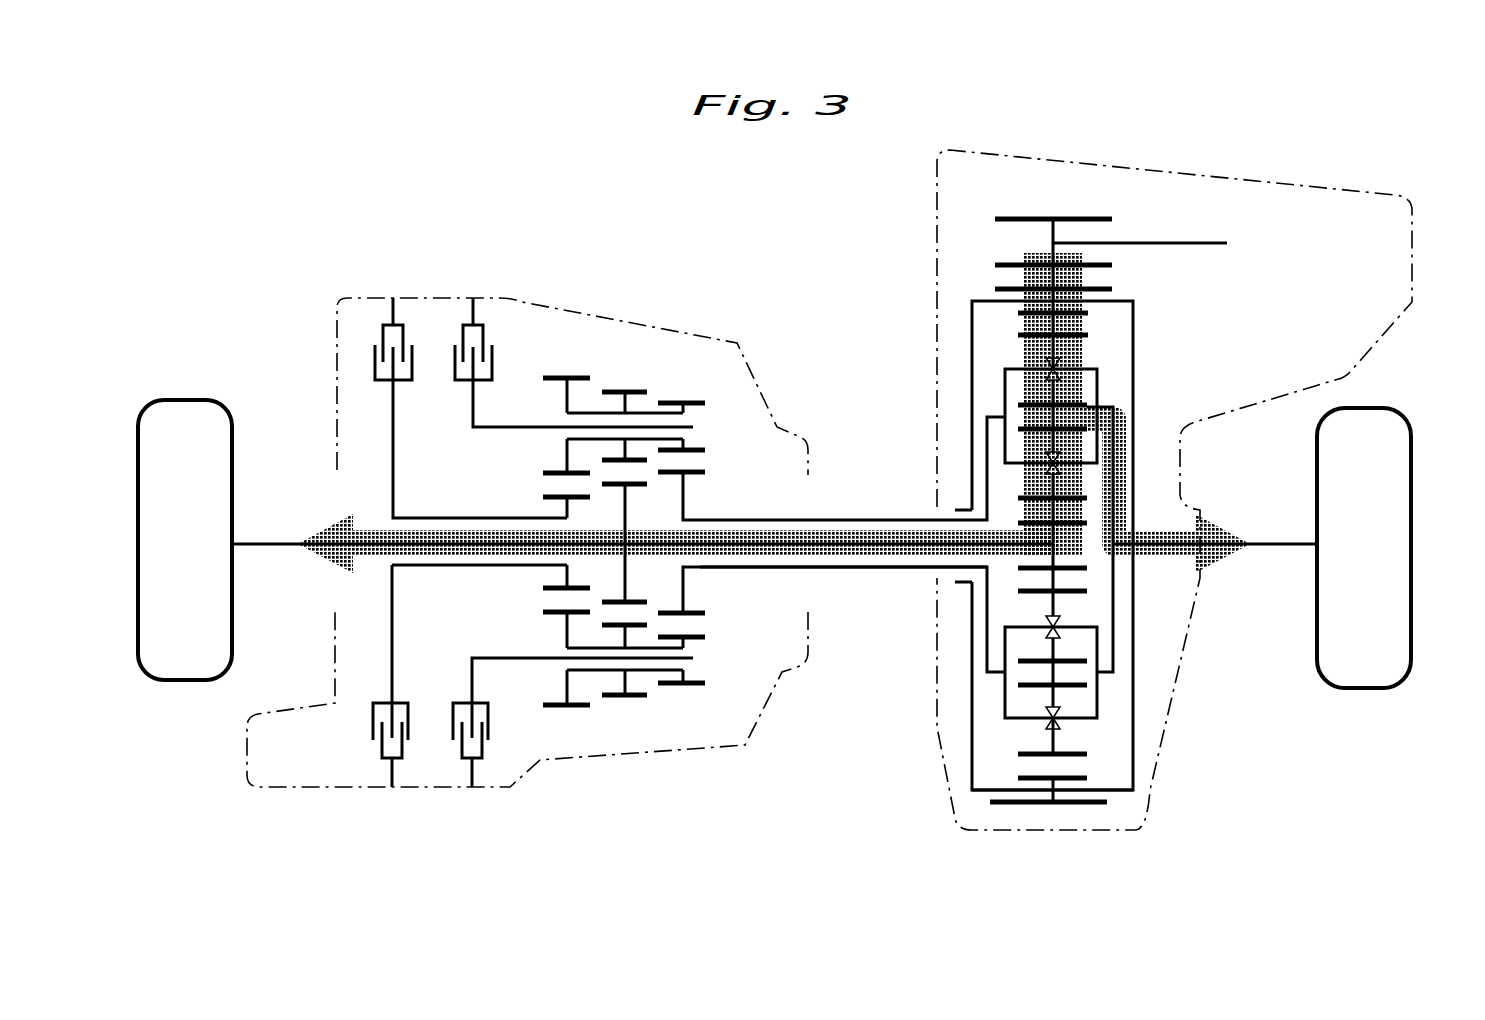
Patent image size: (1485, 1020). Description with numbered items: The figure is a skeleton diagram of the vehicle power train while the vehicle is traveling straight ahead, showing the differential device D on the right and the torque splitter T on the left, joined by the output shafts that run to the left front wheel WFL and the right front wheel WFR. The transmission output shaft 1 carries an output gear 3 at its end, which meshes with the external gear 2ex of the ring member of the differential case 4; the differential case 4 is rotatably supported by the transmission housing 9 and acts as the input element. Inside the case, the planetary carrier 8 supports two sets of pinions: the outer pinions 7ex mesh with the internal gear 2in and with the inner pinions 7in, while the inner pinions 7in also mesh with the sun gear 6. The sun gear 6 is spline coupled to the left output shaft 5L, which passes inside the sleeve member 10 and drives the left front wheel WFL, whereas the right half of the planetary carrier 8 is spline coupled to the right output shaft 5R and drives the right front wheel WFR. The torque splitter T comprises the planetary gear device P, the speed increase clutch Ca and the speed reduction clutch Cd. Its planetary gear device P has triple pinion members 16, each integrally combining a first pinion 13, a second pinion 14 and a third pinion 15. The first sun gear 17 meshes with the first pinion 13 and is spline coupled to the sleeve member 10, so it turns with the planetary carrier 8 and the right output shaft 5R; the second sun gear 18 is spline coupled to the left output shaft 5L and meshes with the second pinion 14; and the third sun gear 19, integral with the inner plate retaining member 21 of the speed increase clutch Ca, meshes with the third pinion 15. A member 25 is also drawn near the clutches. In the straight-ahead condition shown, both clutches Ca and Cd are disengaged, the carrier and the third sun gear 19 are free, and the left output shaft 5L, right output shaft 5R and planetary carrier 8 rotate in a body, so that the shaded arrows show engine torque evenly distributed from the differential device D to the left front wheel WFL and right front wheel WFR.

The output shaft 1 is at (1185, 243).
The external gear 2ex is at (1110, 290).
The internal gear 2in is at (1085, 318).
The output gear 3 is at (1025, 217).
The differential case 4 is at (1133, 742).
The left output shaft 5L is at (272, 548).
The right output shaft 5R is at (1292, 550).
The sun gear 6 is at (1073, 570).
The outer pinions 7ex is at (1020, 343).
The inner pinions 7in is at (1073, 503).
The planetary carrier 8 is at (1117, 648).
The transmission housing 9 is at (1142, 822).
The sleeve member 10 is at (855, 570).
The first pinion 13 is at (712, 545).
The second pinion 14 is at (637, 388).
The third pinion 15 is at (580, 375).
The triple pinion members 16 is at (657, 545).
The first sun gear 17 is at (707, 466).
The second sun gear 18 is at (633, 478).
The third sun gear 19 is at (548, 493).
The inner plate retaining member 21 is at (393, 450).
The shaft 25 is at (492, 430).
The speed increase clutch Ca is at (363, 341).
The speed reduction clutch Cd is at (504, 330).
The differential device D is at (1166, 407).
The planetary gear device P is at (734, 545).
The torque splitter T is at (432, 289).
The left front wheel WFL is at (192, 410).
The right front wheel WFR is at (1405, 442).